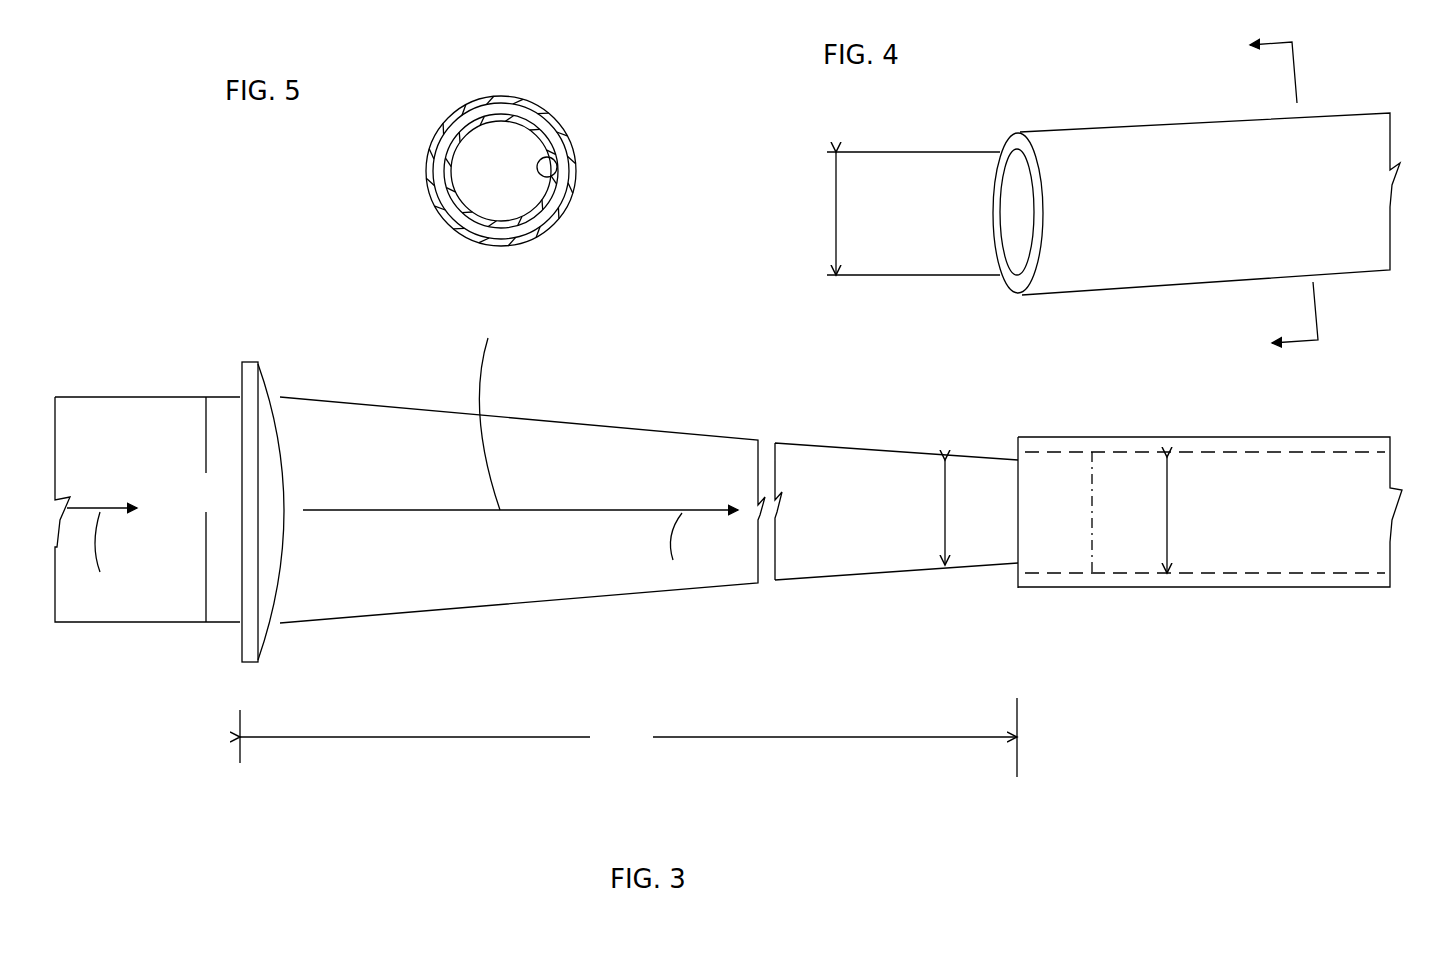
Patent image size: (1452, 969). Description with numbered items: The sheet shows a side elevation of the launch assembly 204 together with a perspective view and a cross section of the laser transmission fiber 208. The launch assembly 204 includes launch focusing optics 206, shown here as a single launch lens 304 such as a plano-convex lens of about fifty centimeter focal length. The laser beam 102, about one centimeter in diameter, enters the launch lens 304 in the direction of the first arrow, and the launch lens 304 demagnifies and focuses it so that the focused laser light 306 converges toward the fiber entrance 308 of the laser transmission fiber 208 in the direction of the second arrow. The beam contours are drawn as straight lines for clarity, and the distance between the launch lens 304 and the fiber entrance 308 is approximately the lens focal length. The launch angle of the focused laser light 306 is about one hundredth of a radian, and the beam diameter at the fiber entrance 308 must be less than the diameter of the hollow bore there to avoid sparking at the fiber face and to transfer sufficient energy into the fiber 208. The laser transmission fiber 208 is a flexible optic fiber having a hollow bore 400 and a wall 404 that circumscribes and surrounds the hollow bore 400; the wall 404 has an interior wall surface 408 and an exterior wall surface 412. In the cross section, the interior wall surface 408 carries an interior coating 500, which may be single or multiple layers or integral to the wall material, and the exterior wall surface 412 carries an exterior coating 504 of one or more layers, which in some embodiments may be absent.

In FIG. 3, the laser beam 102 is at (115, 397).
In FIG. 3, the launch lens 304 is at (252, 360).
In FIG. 3, the launch focusing optics 206 is at (288, 358).
In FIG. 5, the launch focusing optics 206 is at (510, 57).
In FIG. 3, the focused laser light 306 is at (670, 430).
In FIG. 3, the fiber entrance 308 is at (1020, 478).
In FIG. 3, the laser transmission fiber 208 is at (1262, 427).
In FIG. 4, the laser transmission fiber 208 is at (1120, 130).
In FIG. 3, the launch assembly 204 is at (1025, 662).
In FIG. 4, the hollow bore 400 is at (1018, 197).
In FIG. 5, the hollow bore 400 is at (487, 160).
In FIG. 4, the wall 404 is at (1028, 260).
In FIG. 5, the wall 404 is at (542, 215).
In FIG. 4, the interior wall surface 408 is at (1015, 240).
In FIG. 5, the interior wall surface 408 is at (547, 180).
In FIG. 4, the exterior wall surface 412 is at (1103, 243).
In FIG. 5, the exterior wall surface 412 is at (553, 117).
In FIG. 5, the interior coating 500 is at (447, 150).
In FIG. 5, the exterior coating 504 is at (512, 97).